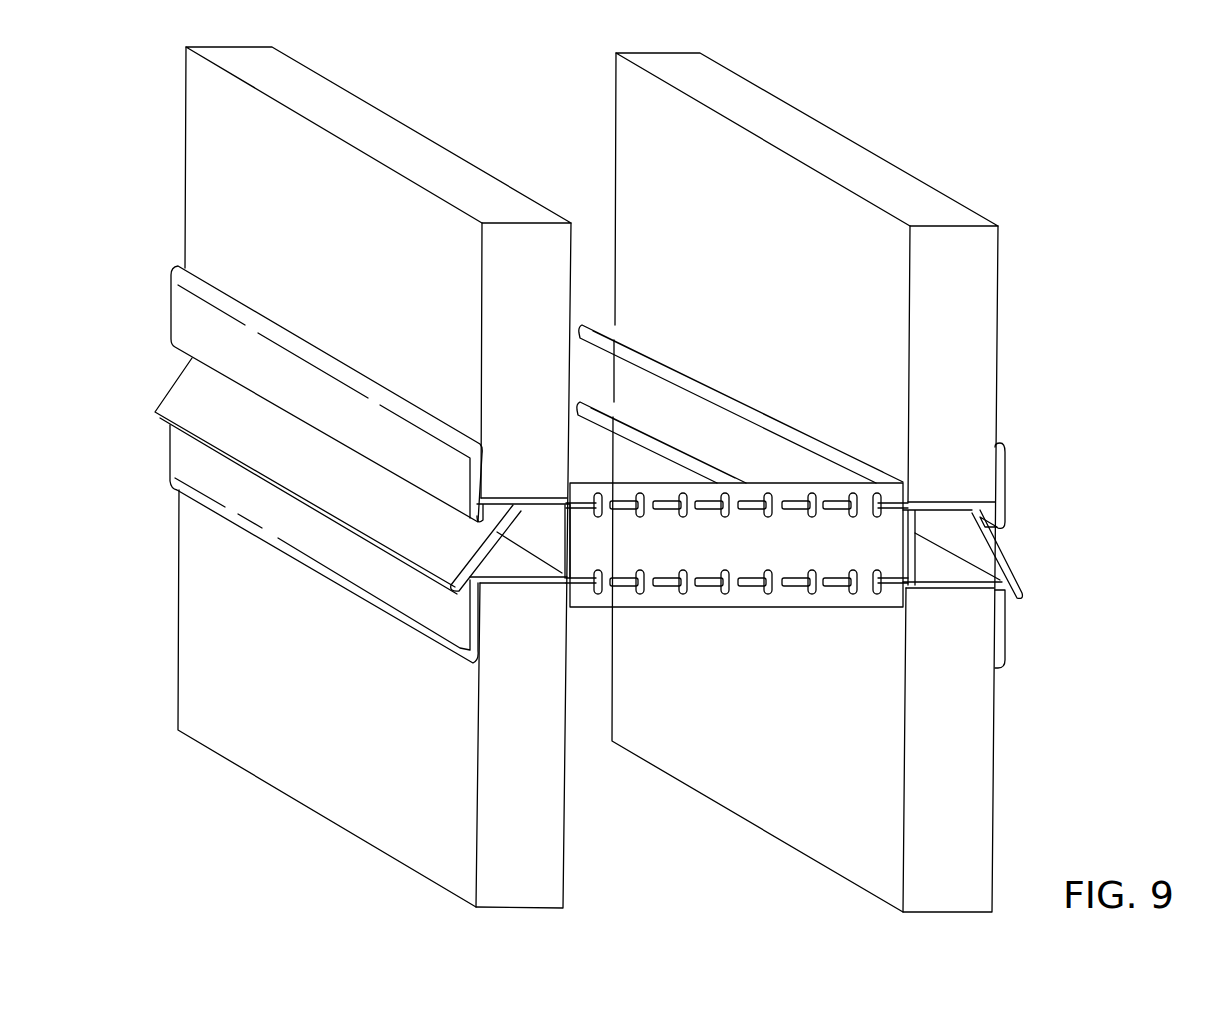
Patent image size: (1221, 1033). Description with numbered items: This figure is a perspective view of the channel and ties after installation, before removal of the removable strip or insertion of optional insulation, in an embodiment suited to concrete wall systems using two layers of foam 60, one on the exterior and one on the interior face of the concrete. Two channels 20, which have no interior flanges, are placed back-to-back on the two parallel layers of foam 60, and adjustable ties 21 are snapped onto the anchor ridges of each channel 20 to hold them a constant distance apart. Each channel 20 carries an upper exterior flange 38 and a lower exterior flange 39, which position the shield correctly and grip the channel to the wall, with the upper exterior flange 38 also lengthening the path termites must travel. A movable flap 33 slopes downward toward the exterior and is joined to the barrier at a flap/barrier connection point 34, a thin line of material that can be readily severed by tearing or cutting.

The channel 20 is at (327, 589).
The adjustable tie 21 is at (763, 617).
The movable flap 33 is at (176, 382).
The flap/barrier connection point 34 is at (1005, 648).
The upper exterior flange 38 is at (170, 304).
The lower exterior flange 39 is at (170, 458).
The foam 60 is at (537, 842).